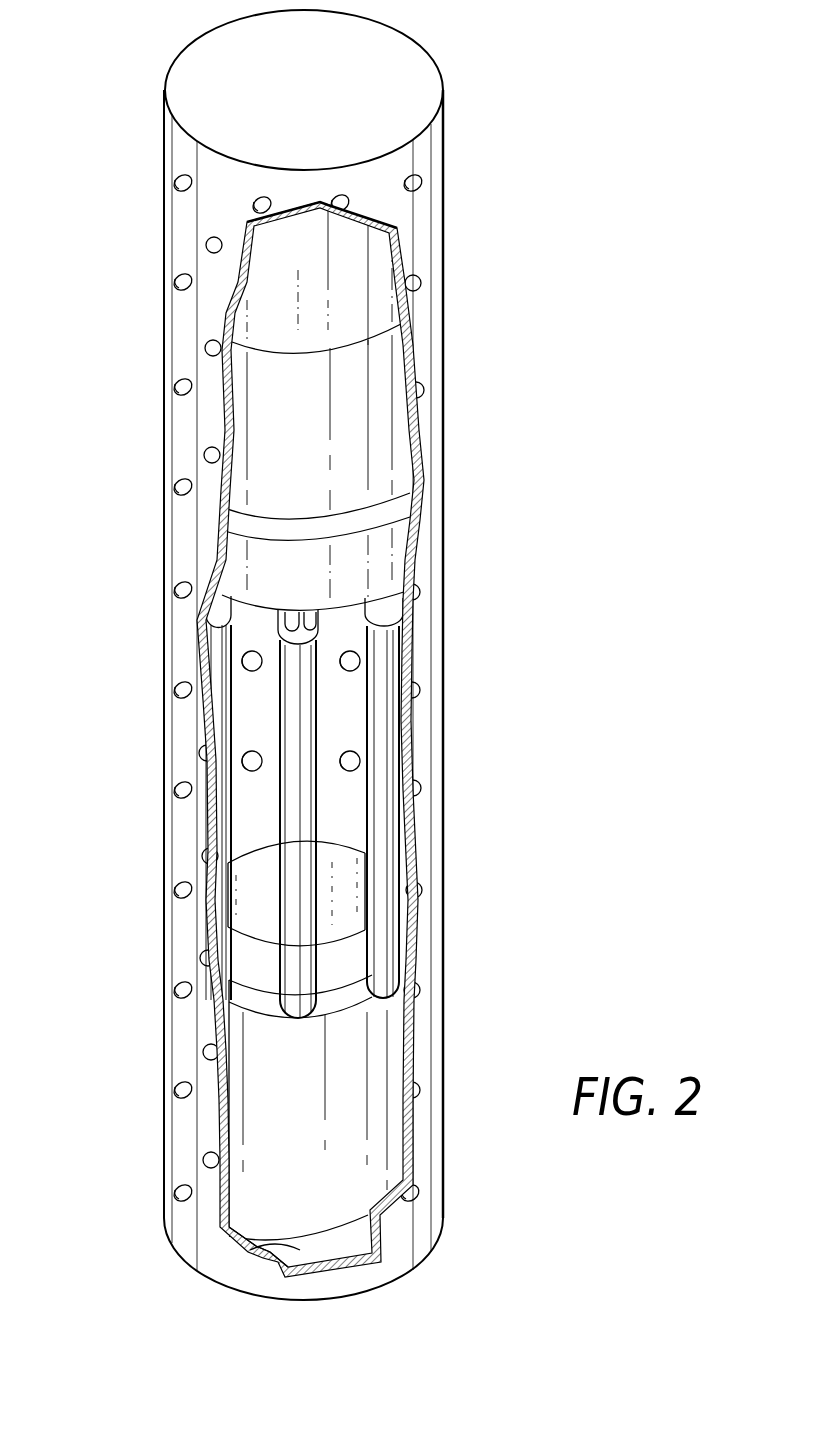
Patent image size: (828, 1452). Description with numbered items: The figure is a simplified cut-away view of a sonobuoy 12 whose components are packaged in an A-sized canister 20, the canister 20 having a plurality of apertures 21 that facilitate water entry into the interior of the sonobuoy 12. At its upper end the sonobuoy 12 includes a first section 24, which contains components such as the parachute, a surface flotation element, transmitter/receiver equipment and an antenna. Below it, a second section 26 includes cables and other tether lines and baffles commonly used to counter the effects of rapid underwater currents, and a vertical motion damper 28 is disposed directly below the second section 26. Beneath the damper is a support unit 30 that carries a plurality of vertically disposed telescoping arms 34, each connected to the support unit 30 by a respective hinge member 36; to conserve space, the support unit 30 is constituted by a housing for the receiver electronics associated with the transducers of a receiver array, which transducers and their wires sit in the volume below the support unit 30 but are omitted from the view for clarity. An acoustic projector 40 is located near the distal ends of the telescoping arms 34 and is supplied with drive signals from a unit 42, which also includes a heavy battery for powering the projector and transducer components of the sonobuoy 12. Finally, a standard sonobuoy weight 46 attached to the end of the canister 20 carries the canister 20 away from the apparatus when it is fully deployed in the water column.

The sonobuoy 12 is at (514, 732).
The A-sized canister 20 is at (180, 243).
The apertures 21 is at (206, 455).
The first section 24 is at (318, 299).
The second section 26 is at (316, 469).
The vertical motion damper 28 is at (382, 503).
The support unit 30 is at (396, 542).
The telescoping arms 34 is at (300, 793).
The hinge members 36 is at (297, 636).
The acoustic projector 40 is at (345, 962).
The unit 42 is at (378, 1067).
The sonobuoy weight 46 is at (250, 1252).